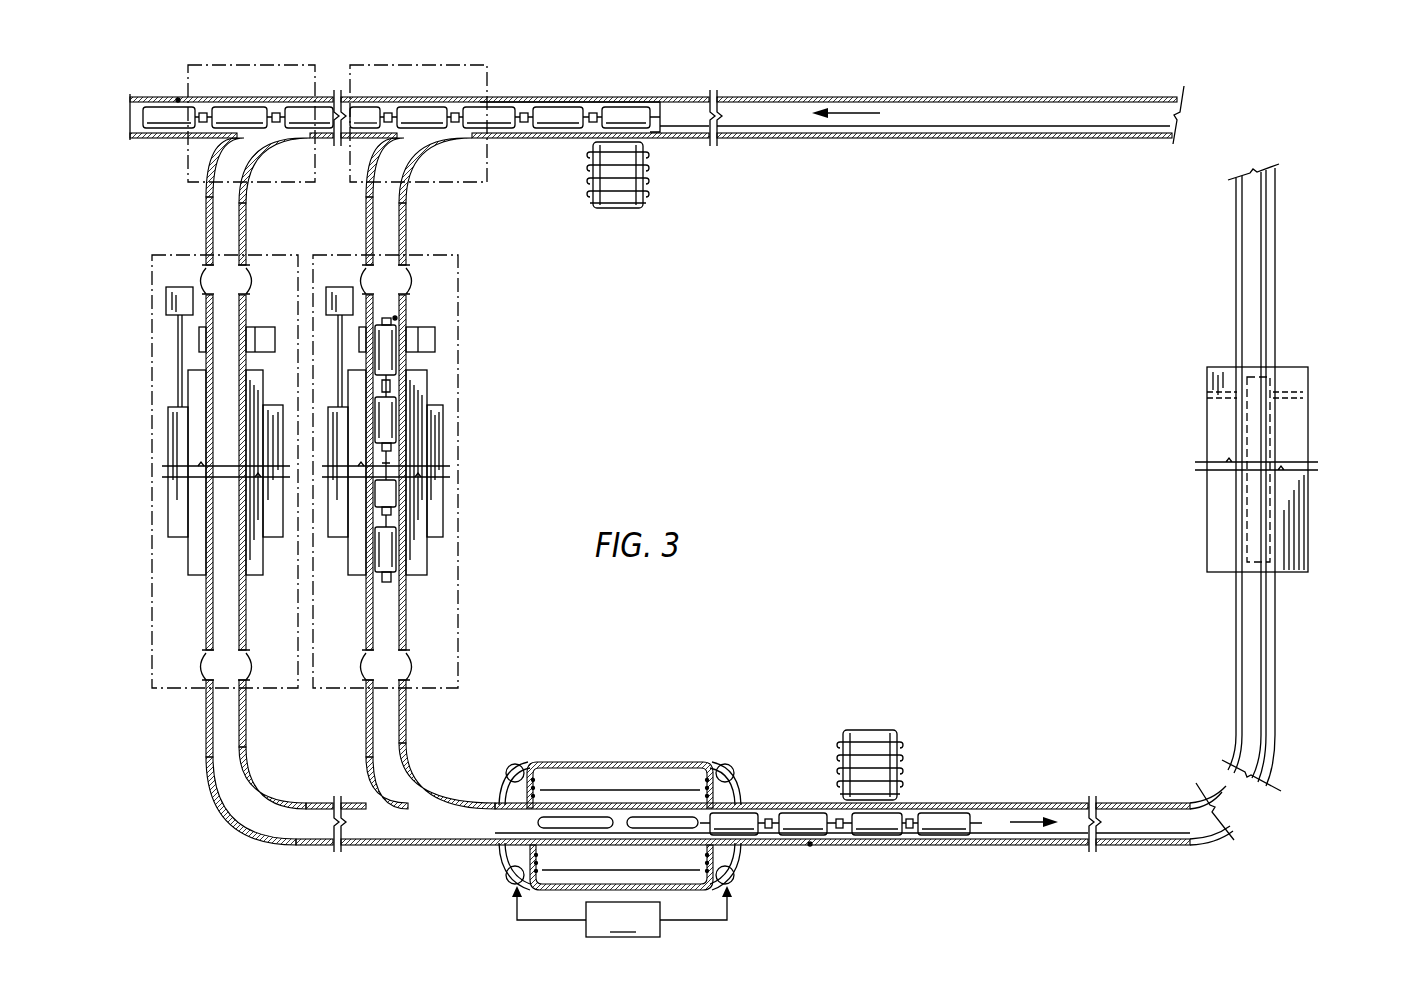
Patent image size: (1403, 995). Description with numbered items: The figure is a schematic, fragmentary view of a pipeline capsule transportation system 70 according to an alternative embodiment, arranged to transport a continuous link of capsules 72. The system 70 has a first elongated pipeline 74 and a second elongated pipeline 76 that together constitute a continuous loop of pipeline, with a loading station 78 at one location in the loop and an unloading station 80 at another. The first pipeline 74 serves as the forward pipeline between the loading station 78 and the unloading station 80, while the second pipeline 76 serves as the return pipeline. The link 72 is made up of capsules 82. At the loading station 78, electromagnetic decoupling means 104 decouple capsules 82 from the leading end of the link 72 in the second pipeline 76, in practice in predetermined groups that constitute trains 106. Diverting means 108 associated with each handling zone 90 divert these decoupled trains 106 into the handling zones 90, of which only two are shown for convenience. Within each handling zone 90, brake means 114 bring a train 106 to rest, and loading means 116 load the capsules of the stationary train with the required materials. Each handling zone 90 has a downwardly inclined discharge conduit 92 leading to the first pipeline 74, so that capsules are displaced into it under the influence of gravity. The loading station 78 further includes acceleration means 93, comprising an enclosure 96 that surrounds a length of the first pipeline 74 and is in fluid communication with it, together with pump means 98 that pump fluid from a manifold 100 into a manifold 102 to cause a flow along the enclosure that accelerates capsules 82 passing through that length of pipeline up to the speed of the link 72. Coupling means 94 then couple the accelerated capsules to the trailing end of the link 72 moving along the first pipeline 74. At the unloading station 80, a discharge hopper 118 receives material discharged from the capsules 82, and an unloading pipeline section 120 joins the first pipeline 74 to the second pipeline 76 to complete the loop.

The pipeline capsule transportation system 70 is at (1224, 82).
The continuous link of capsules 72 is at (957, 800).
The first elongated pipeline 74 is at (1150, 847).
The second elongated pipeline 76 is at (1035, 97).
The loading station 78 is at (163, 720).
The unloading station 80 is at (1254, 477).
The capsules 82 is at (635, 110).
The handling zones 90 is at (198, 390).
The downwardly inclined discharge conduit 92 is at (252, 738).
The acceleration means 93 is at (636, 809).
The coupling means 94 is at (893, 732).
The enclosure 96 is at (575, 762).
The pump means 98 is at (622, 911).
The manifold 100 is at (729, 764).
The manifold 102 is at (520, 764).
The electromagnetic decoupling means 104 is at (643, 205).
The trains 106 is at (176, 92).
The diverting means 108 is at (268, 65).
The brake means 114 is at (265, 323).
The loading means 116 is at (168, 518).
The discharge hopper 118 is at (1226, 535).
The unloading pipeline section 120 is at (1278, 500).